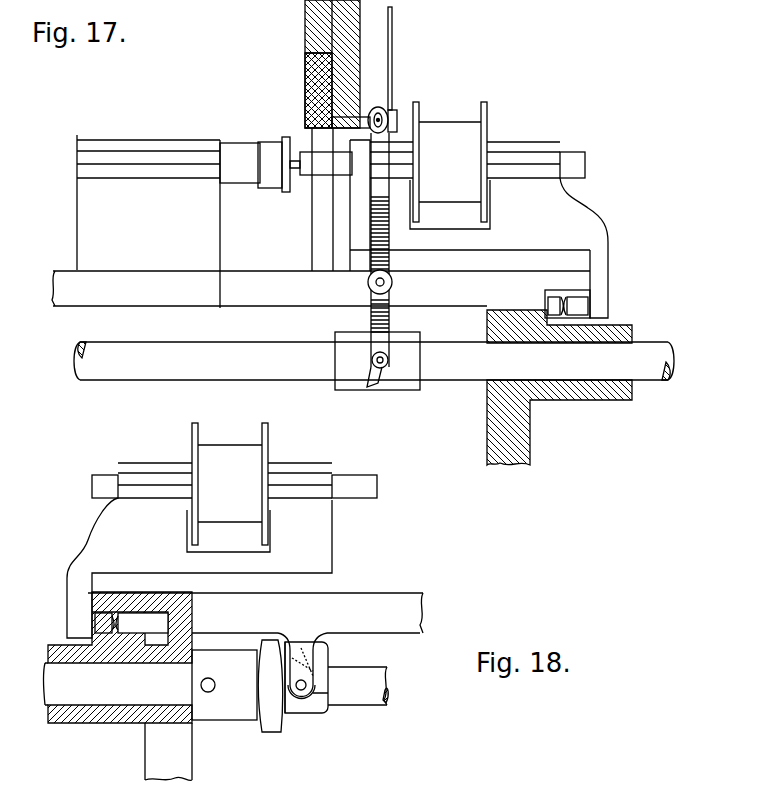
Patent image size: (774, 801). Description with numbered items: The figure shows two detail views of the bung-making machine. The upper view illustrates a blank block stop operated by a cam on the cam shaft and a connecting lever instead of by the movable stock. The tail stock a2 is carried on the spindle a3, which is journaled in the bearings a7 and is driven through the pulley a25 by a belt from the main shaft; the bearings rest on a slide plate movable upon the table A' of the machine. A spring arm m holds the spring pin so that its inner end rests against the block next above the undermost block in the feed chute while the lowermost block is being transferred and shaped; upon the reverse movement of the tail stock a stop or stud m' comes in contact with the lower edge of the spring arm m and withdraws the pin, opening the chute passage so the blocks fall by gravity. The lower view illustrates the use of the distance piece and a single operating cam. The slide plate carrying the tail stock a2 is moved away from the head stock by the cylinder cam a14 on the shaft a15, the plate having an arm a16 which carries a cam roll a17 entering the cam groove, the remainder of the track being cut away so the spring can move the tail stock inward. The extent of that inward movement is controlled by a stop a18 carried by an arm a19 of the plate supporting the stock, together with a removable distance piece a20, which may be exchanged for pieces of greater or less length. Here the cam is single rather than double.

In FIG. 17, the table A' is at (342, 300).
In FIG. 17, the spring arm m is at (364, 103).
In FIG. 17, the stop or stud m' is at (403, 58).
In FIG. 17, the pulley a25 is at (450, 165).
In FIG. 18, the spindle a3 is at (100, 487).
In FIG. 18, the tail stock a2 is at (380, 493).
In FIG. 18, the bearings a7 is at (153, 530).
In FIG. 18, the arm a19 is at (120, 657).
In FIG. 18, the removable distance piece a20 is at (143, 623).
In FIG. 18, the stop a18 is at (97, 623).
In FIG. 18, the arm a16 is at (302, 660).
In FIG. 18, the cam roll a17 is at (302, 702).
In FIG. 18, the cylinder cam a14 is at (285, 658).
In FIG. 18, the shaft a15 is at (358, 686).